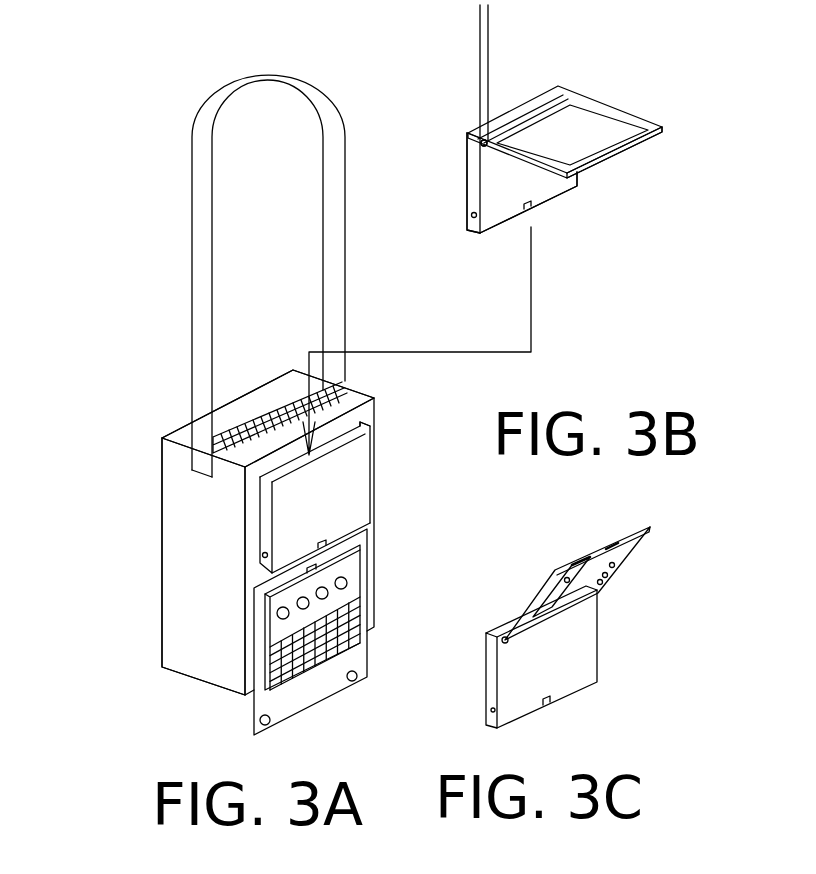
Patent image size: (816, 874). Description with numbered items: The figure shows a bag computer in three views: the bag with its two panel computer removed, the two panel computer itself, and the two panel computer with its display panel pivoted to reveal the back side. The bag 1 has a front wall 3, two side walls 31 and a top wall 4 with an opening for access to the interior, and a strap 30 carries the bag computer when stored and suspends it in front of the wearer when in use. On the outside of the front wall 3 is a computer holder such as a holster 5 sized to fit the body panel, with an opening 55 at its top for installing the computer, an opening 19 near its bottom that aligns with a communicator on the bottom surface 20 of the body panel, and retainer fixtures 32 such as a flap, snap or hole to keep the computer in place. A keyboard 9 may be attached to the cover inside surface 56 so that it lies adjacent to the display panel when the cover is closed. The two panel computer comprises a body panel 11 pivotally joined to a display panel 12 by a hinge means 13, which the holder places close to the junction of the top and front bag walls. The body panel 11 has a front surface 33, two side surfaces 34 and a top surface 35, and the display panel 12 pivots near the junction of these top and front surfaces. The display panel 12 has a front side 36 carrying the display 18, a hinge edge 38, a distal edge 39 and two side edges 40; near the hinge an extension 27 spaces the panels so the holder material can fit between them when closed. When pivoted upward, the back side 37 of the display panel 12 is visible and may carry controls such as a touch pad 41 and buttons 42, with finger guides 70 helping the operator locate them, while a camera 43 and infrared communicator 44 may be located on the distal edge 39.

In FIG. 3A, the bag 1 is at (160, 455).
In FIG. 3A, the front wall 3 is at (250, 483).
In FIG. 3A, the top wall 4 is at (262, 400).
In FIG. 3A, the holster 5 is at (323, 502).
In FIG. 3A, the keyboard 9 is at (288, 627).
In FIG. 3B, the body panel 11 is at (460, 184).
In FIG. 3B, the display panel 12 is at (648, 140).
In FIG. 3B, the hinge means 13 is at (483, 143).
In FIG. 3B, the display 18 is at (587, 128).
In FIG. 3A, the opening 19 is at (322, 547).
In FIG. 3C, the bottom surface 20 is at (552, 702).
In FIG. 3B, the extension 27 is at (497, 22).
In FIG. 3A, the strap 30 is at (196, 226).
In FIG. 3A, the side walls 31 is at (198, 605).
In FIG. 3A, the retainer fixtures 32 is at (262, 557).
In FIG. 3B, the retainer fixtures 32 is at (474, 218).
In FIG. 3B, the front surface 33 is at (538, 190).
In FIG. 3B, the side surfaces 34 is at (472, 197).
In FIG. 3B, the top surface 35 is at (523, 108).
In FIG. 3B, the front side 36 is at (630, 112).
In FIG. 3C, the back side 37 is at (587, 593).
In FIG. 3B, the hinge edge 38 is at (557, 107).
In FIG. 3B, the distal edge 39 is at (587, 167).
In FIG. 3B, the side edges 40 is at (483, 152).
In FIG. 3C, the touch pad 41 is at (548, 596).
In FIG. 3C, the buttons 42 is at (610, 580).
In FIG. 3C, the camera 43 is at (593, 553).
In FIG. 3C, the infrared communicator 44 is at (615, 545).
In FIG. 3A, the opening 55 is at (362, 425).
In FIG. 3A, the cover inside surface 56 is at (323, 675).
In FIG. 3C, the finger guides 70 is at (630, 550).